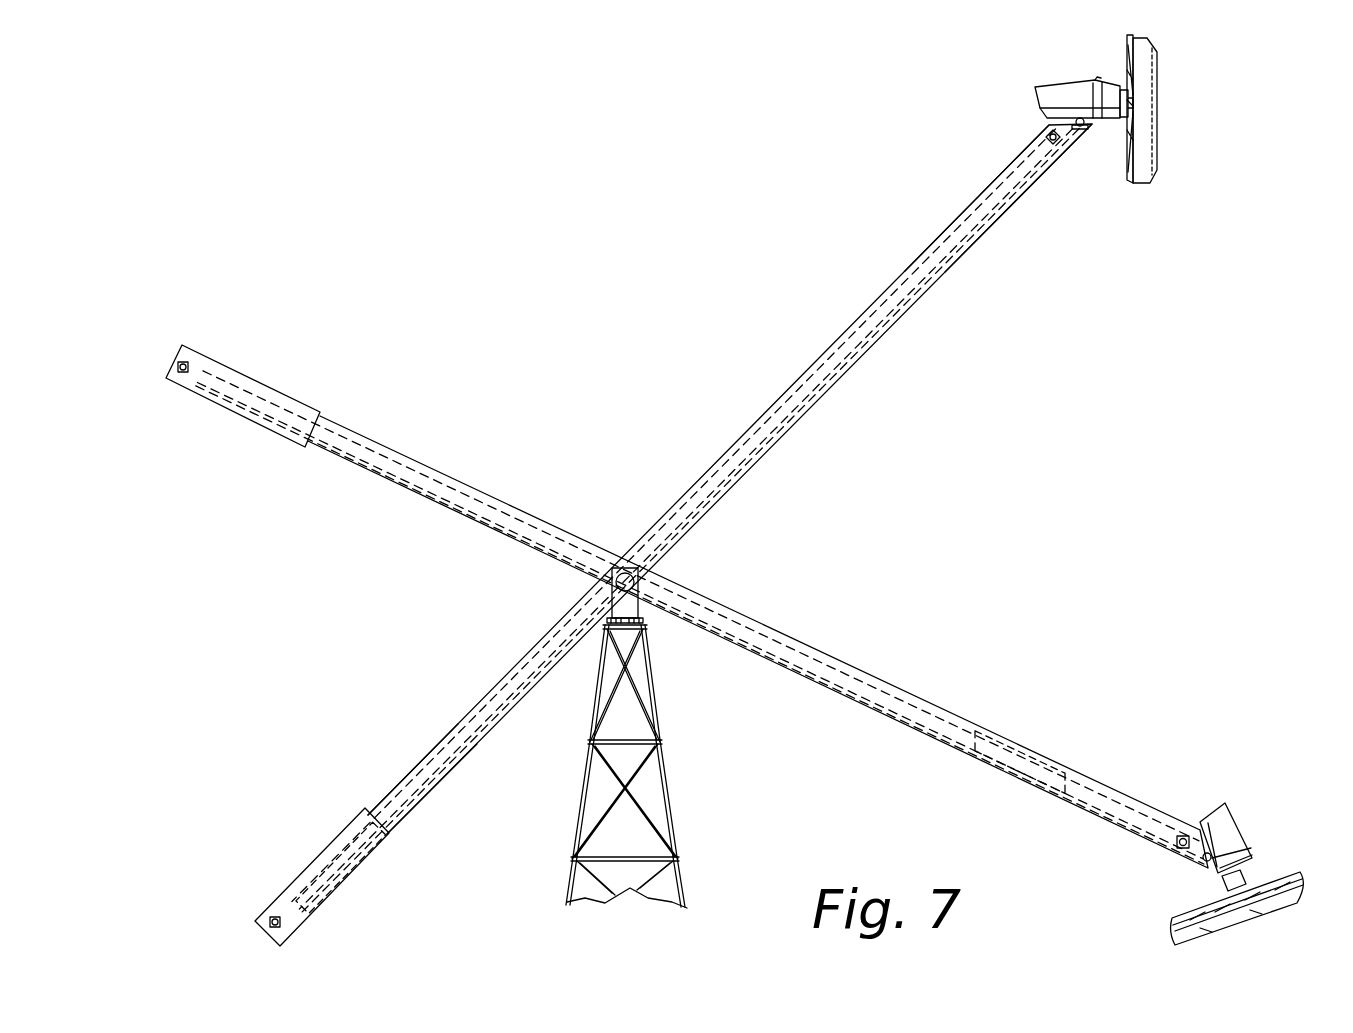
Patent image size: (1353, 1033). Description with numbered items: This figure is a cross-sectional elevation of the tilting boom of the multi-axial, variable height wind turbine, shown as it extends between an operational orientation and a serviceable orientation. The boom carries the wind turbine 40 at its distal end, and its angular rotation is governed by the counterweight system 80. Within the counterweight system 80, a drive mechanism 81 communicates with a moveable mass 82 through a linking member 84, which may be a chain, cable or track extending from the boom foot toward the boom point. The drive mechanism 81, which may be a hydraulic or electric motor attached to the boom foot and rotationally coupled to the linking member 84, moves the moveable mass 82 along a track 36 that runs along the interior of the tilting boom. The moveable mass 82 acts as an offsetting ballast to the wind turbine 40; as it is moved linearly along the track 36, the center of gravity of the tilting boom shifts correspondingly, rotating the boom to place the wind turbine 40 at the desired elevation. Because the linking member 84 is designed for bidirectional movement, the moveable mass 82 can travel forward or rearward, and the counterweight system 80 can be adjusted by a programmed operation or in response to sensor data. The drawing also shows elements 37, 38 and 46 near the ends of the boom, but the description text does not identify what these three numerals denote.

The track 36 is at (851, 337).
The arm segment 37 is at (1050, 188).
The light fixture 38 is at (1178, 800).
The wind turbine 40 is at (1180, 58).
The light housing 46 is at (1030, 72).
The counterweight system 80 is at (268, 830).
The drive mechanism 81 is at (183, 372).
The moveable mass 82 is at (347, 877).
The linking member 84 is at (388, 785).